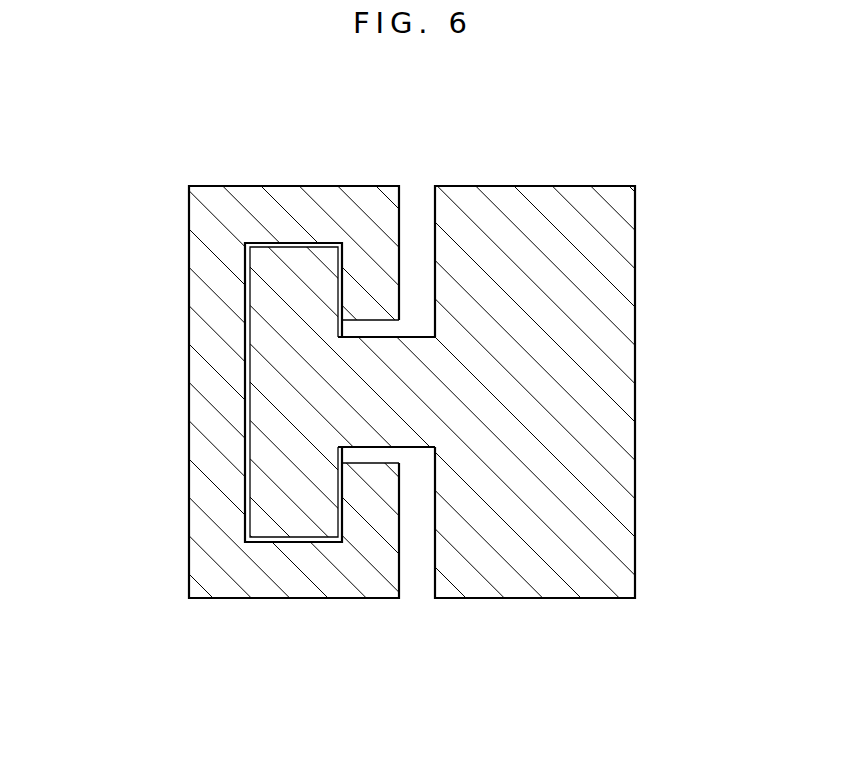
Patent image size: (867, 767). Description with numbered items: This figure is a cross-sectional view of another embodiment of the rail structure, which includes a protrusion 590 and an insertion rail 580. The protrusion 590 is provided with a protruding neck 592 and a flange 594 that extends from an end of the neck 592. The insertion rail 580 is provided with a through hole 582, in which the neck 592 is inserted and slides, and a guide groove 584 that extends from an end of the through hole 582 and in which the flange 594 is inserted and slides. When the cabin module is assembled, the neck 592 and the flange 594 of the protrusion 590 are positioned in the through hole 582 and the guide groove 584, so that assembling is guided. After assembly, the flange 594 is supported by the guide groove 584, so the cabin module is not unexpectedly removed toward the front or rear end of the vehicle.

The insertion rail 580 is at (210, 359).
The through hole 582 is at (369, 321).
The guide groove 584 is at (281, 246).
The protrusion 590 is at (252, 426).
The neck 592 is at (397, 413).
The flange 594 is at (307, 267).